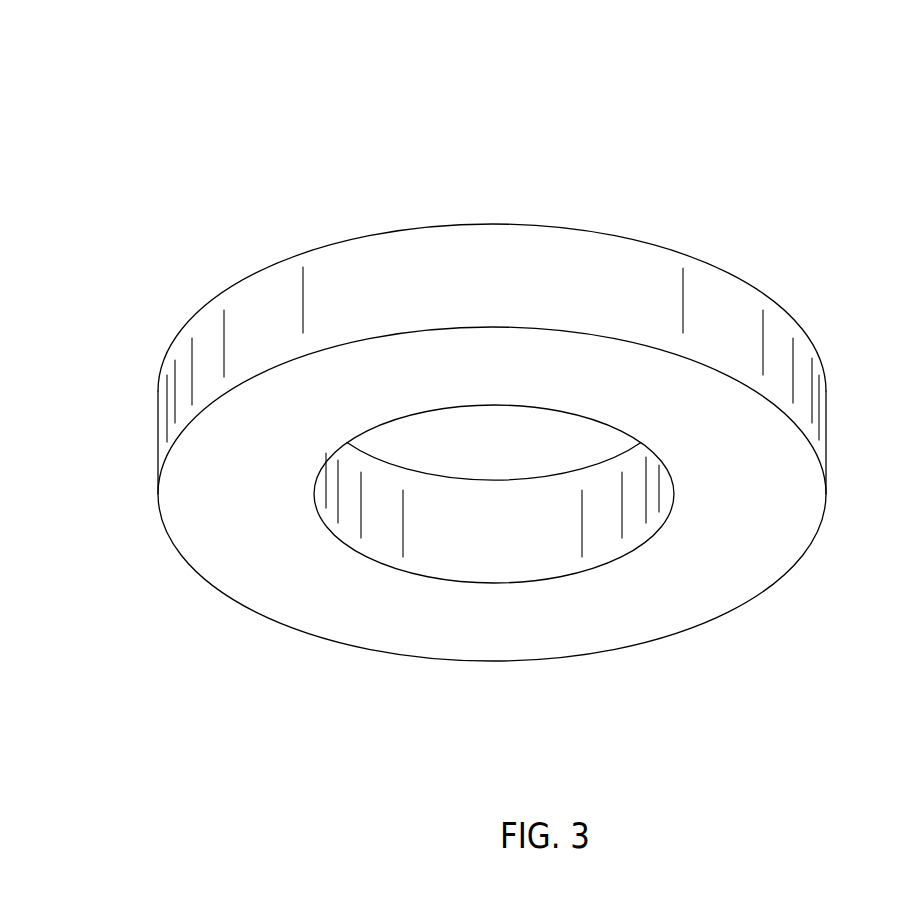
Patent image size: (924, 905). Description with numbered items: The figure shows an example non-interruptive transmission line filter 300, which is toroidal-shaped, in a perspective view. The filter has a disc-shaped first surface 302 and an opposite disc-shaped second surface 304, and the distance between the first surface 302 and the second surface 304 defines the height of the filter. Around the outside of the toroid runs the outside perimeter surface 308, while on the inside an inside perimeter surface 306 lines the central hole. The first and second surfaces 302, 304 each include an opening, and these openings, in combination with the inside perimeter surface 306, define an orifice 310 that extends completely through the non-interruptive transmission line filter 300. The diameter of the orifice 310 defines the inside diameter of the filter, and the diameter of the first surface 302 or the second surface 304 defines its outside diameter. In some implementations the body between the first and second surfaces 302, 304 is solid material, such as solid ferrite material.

The non-interruptive transmission line filter 300 is at (182, 66).
The first surface 302 is at (474, 222).
The second surface 304 is at (350, 615).
The inside perimeter surface 306 is at (604, 519).
The outside perimeter surface 308 is at (736, 307).
The orifice 310 is at (488, 444).